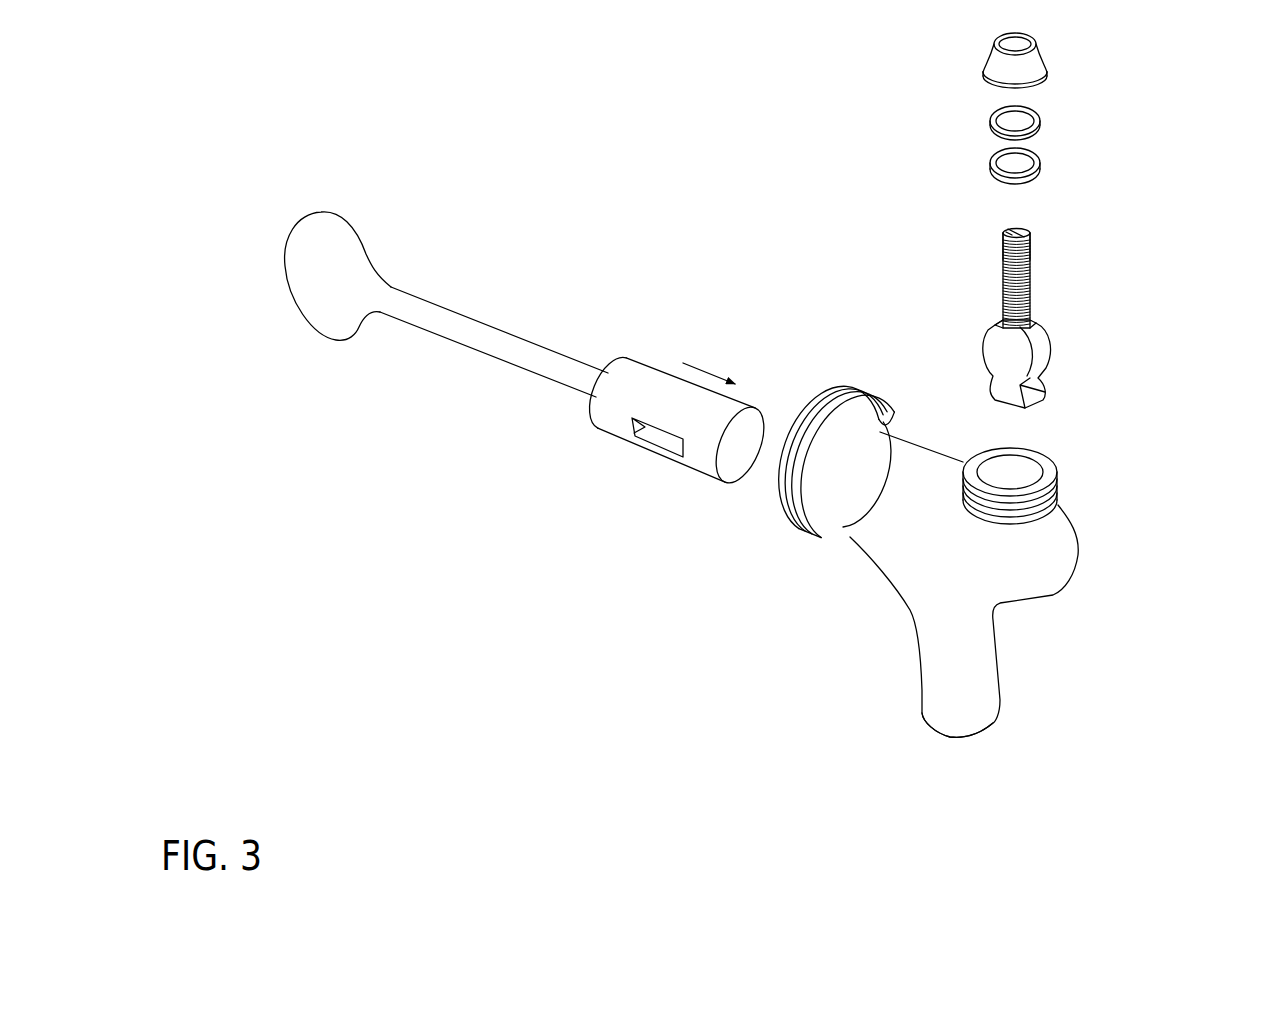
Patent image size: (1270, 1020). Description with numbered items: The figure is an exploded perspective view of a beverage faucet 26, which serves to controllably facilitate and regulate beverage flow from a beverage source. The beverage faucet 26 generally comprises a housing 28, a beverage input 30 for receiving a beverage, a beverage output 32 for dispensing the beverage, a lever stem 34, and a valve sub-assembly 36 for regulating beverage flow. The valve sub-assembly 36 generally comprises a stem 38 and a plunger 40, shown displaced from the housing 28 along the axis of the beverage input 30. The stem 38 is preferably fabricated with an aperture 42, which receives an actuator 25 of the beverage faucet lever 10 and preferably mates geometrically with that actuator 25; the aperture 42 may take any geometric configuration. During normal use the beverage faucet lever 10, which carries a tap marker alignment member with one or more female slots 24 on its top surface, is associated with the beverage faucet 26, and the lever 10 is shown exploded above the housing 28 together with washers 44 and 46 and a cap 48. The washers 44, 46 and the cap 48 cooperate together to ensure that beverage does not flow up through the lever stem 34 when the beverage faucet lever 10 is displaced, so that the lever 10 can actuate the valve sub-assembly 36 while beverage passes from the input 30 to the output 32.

The beverage faucet lever 10 is at (1032, 270).
The female slot 24 is at (1008, 234).
The actuator 25 is at (1043, 392).
The beverage faucet 26 is at (718, 544).
The housing 28 is at (1110, 553).
The beverage input 30 is at (850, 388).
The beverage output 32 is at (995, 724).
The lever stem 34 is at (1060, 478).
The valve sub-assembly 36 is at (475, 285).
The stem 38 is at (627, 360).
The plunger 40 is at (270, 196).
The aperture 42 is at (637, 437).
The washer 44 is at (1043, 162).
The washer 46 is at (1043, 117).
The cap 48 is at (1040, 48).